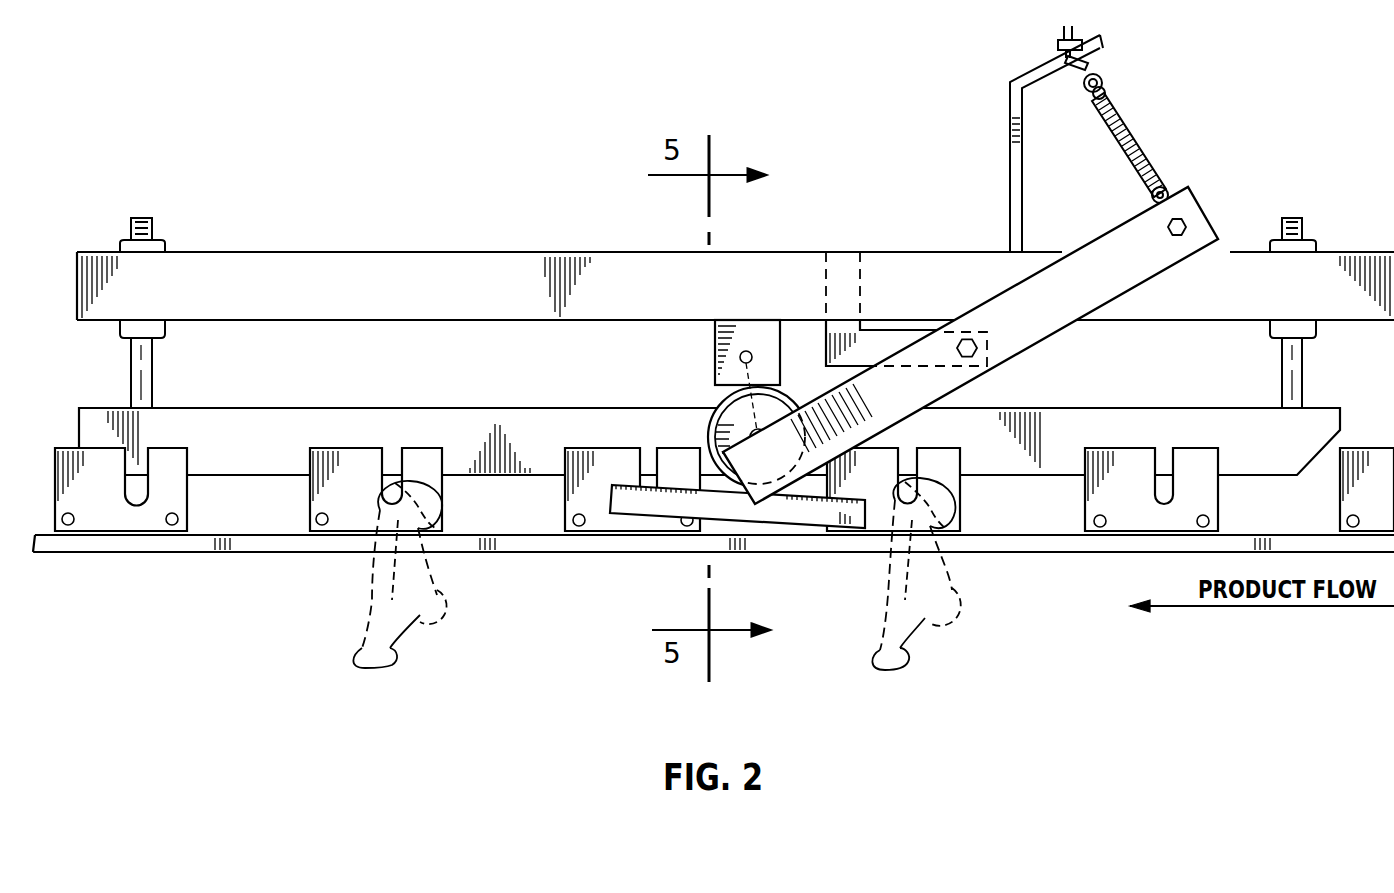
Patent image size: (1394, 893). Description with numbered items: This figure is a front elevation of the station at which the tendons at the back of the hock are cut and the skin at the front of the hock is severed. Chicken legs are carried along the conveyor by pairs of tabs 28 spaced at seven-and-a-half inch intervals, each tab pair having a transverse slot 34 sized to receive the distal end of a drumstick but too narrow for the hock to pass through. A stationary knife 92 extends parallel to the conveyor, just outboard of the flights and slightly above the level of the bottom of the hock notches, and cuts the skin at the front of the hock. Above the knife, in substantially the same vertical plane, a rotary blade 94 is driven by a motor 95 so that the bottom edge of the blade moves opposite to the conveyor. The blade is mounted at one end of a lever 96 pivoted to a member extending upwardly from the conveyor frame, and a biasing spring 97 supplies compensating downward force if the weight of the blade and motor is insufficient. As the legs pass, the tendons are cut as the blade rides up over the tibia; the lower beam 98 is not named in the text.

The tab 28 is at (724, 485).
The transverse slot 34 is at (1160, 458).
The stationary knife 92 is at (793, 512).
The rotary blade 94 is at (712, 405).
The motor 95 is at (780, 350).
The lever 96 is at (1030, 330).
The biasing spring 97 is at (1145, 145).
The lower beam 98 is at (540, 427).